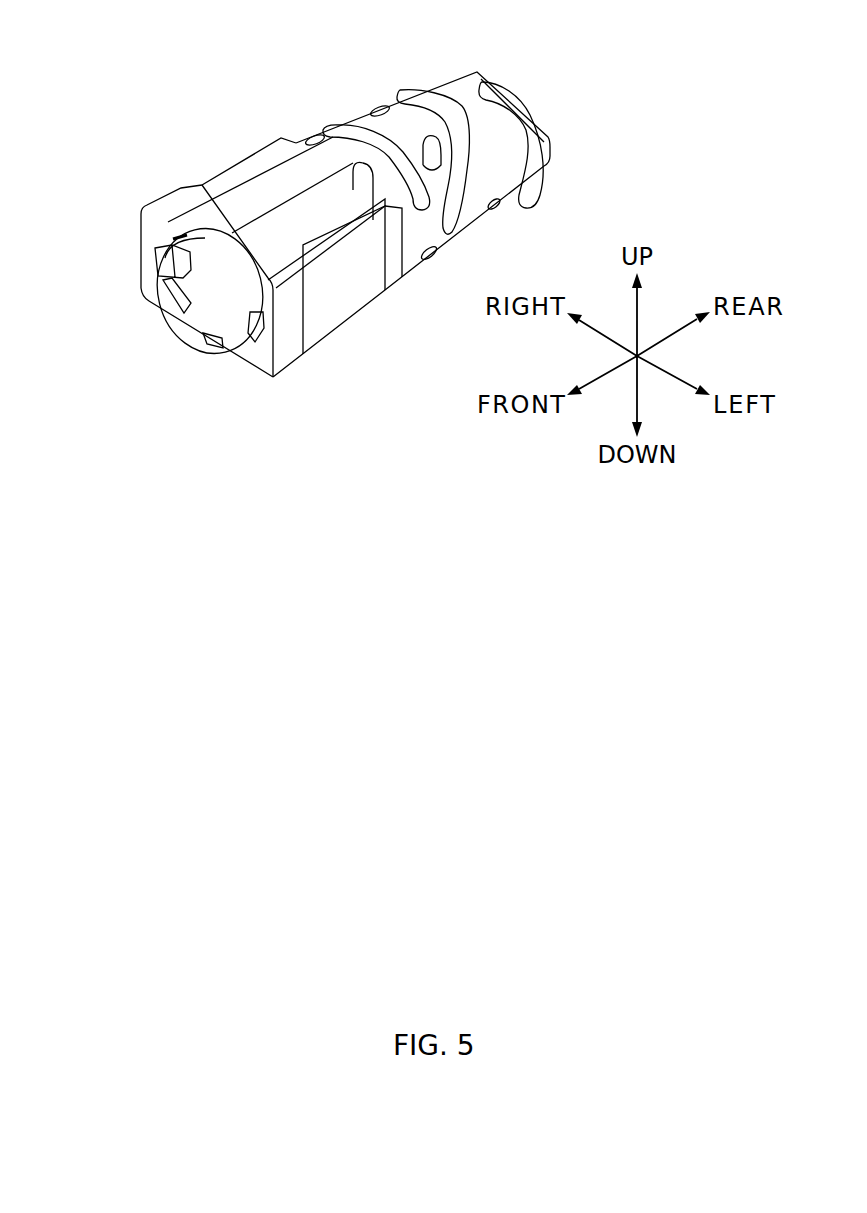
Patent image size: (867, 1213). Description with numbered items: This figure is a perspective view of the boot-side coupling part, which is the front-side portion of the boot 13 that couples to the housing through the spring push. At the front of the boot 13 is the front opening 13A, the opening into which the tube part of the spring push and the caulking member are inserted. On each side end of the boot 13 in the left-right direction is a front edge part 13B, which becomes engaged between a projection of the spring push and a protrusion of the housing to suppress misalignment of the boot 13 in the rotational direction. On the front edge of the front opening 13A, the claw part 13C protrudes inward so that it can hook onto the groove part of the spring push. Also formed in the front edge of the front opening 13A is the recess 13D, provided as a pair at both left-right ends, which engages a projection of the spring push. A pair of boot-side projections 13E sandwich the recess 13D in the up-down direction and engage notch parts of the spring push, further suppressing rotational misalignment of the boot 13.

The boot 13 is at (351, 122).
The front opening 13A is at (222, 272).
The front edge part 13B is at (288, 353).
The claw part 13C is at (204, 335).
The recess 13D is at (158, 262).
The boot-side projections 13E is at (263, 322).